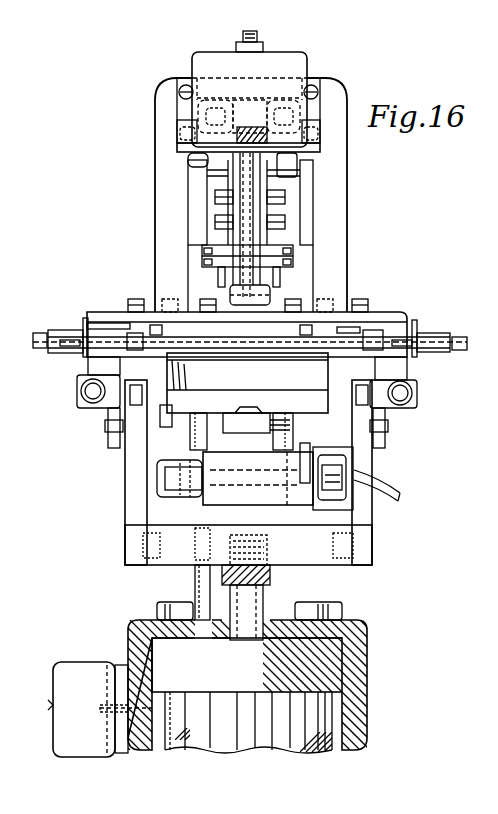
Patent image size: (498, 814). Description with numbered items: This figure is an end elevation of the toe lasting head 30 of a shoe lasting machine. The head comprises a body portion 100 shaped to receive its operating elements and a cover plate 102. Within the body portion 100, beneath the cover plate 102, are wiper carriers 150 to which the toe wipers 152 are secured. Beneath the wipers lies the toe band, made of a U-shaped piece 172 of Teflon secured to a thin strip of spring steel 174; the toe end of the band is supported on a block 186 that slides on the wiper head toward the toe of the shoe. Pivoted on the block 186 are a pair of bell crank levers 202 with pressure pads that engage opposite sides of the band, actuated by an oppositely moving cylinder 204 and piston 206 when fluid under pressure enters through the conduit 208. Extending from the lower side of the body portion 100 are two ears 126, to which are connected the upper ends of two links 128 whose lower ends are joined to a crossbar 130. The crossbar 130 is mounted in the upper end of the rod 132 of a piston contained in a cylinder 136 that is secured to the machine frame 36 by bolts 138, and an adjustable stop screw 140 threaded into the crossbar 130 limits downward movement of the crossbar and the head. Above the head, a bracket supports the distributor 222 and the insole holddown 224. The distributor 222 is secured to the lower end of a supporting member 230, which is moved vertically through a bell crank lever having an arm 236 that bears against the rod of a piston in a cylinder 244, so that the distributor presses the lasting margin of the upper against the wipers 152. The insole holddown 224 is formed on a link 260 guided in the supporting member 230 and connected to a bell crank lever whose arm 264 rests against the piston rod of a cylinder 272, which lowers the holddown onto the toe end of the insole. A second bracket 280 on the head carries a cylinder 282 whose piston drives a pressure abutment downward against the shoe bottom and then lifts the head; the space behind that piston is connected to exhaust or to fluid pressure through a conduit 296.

The toe lasting head 30 is at (408, 307).
The machine frame 36 is at (368, 659).
The body portion 100 is at (406, 358).
The cover plate 102 is at (386, 317).
The ears 126 is at (108, 423).
The links 128 is at (125, 470).
The crossbar 130 is at (338, 564).
The rod 132 is at (264, 601).
The cylinder 136 is at (330, 715).
The bolts 138 is at (160, 605).
The adjustable stop screw 140 is at (197, 593).
The wiper carriers 150 is at (165, 350).
The toe wipers 152 is at (135, 340).
The U-shaped piece 172 is at (256, 385).
The strip of spring steel 174 is at (247, 400).
The block 186 is at (252, 452).
The bell crank levers 202 is at (190, 425).
The cylinder 204 is at (263, 505).
The piston 206 is at (192, 492).
The conduit 208 is at (396, 472).
The distributor 222 is at (278, 290).
The insole holddown 224 is at (238, 297).
The supporting member 230 is at (293, 255).
The arm 236 is at (186, 173).
The cylinder 244 is at (224, 100).
The link 260 is at (256, 200).
The arm 264 is at (292, 163).
The cylinder 272 is at (287, 100).
The second bracket 280 is at (158, 212).
The cylinder 282 is at (192, 72).
The conduit 296 is at (242, 38).